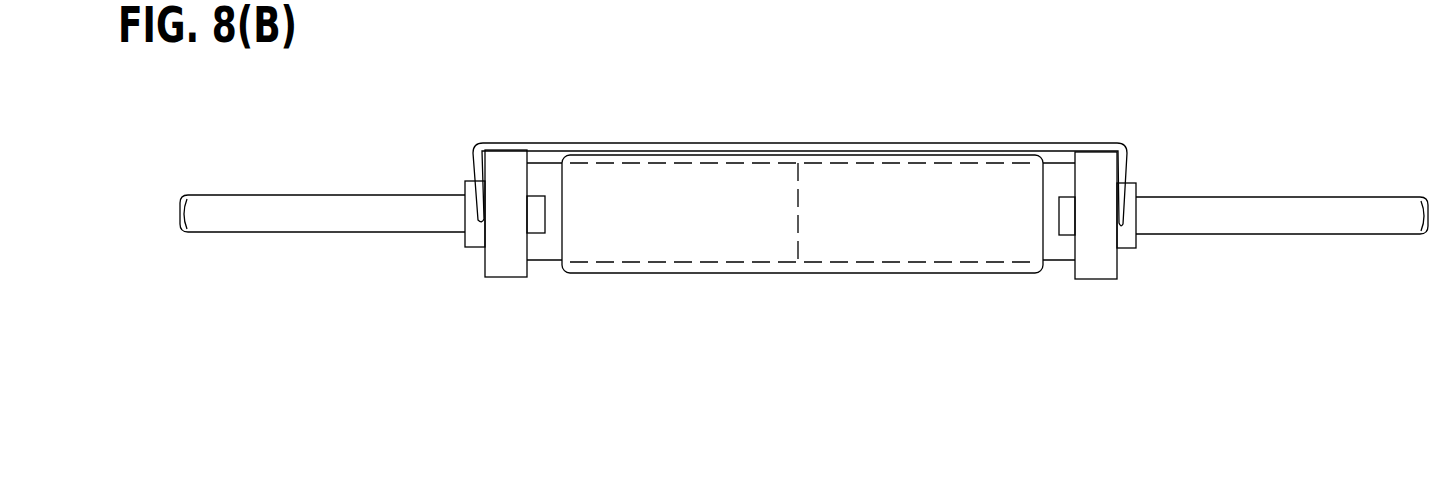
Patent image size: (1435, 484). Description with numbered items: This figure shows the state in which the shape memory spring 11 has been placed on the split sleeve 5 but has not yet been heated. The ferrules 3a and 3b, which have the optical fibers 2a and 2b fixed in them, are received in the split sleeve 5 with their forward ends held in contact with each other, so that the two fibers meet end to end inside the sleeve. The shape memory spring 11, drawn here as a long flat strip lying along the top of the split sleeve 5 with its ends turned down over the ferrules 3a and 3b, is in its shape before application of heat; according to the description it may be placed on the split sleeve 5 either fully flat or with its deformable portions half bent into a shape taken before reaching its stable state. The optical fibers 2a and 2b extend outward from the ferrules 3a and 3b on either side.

The optical fiber 2a is at (262, 195).
The optical fiber 2b is at (1257, 197).
The ferrule 3a is at (538, 242).
The ferrule 3b is at (1052, 242).
The split sleeve 5 is at (660, 243).
The shape memory spring 11 is at (547, 143).